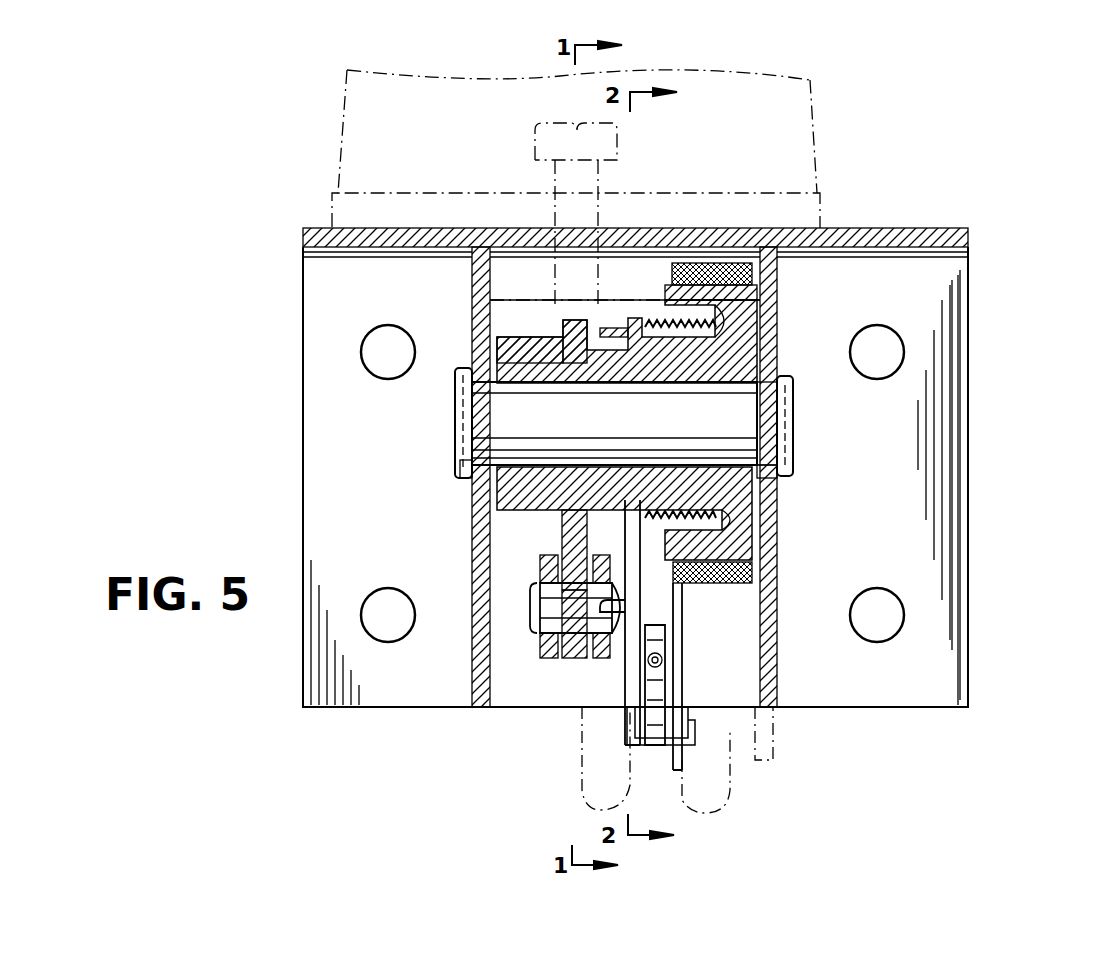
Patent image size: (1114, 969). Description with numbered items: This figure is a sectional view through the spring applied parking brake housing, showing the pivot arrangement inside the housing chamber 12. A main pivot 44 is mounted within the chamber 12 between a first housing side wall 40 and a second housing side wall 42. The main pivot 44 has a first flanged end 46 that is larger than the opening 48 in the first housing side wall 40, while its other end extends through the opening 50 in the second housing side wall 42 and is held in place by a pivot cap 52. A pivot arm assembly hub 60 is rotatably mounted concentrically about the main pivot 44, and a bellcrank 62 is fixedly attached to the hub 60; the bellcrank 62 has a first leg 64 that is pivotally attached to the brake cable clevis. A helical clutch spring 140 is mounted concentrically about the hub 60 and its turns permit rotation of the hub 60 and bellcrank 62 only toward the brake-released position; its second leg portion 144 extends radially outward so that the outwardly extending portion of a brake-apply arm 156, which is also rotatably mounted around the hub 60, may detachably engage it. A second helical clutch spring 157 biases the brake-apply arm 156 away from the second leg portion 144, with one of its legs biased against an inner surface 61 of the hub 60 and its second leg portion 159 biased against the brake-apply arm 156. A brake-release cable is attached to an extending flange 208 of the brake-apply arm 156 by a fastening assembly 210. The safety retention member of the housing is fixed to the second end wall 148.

The chamber 12 is at (533, 330).
The first housing side wall 40 is at (472, 566).
The second housing side wall 42 is at (757, 540).
The main pivot 44 is at (673, 390).
The first flanged end 46 is at (460, 430).
The opening 48 is at (470, 490).
The opening 50 is at (772, 478).
The pivot cap 52 is at (783, 423).
The pivot arm assembly hub 60 is at (780, 327).
The inner surface 61 is at (692, 292).
The bellcrank 62 is at (548, 355).
The first leg 64 is at (570, 657).
The helical clutch spring 140 is at (670, 596).
The second leg portion 144 is at (665, 640).
The second end wall 148 is at (930, 490).
The brake-apply arm 156 is at (614, 335).
The second helical clutch spring 157 is at (648, 320).
The second leg portion 159 is at (655, 598).
The extending flange 208 is at (650, 730).
The fastening assembly 210 is at (700, 748).